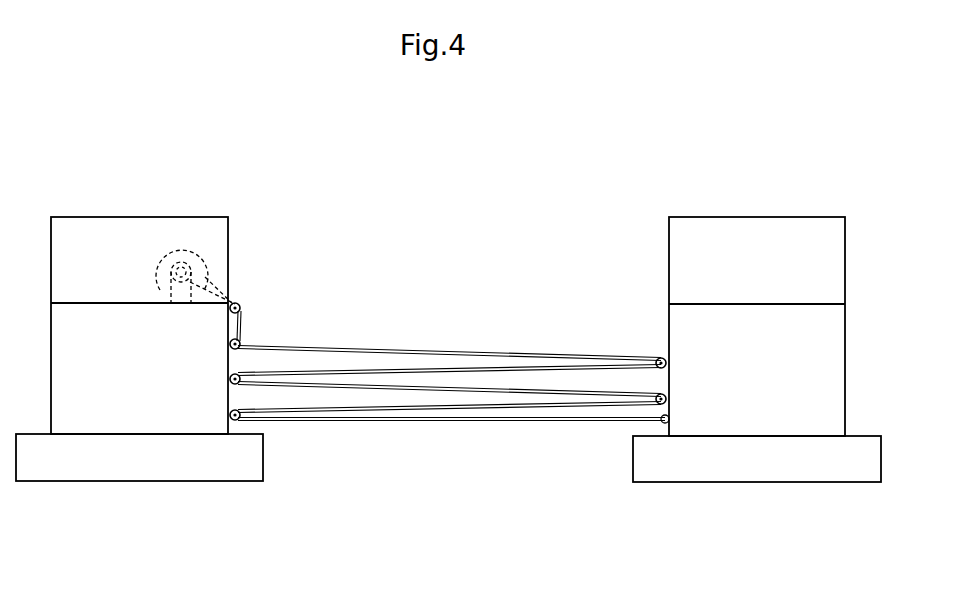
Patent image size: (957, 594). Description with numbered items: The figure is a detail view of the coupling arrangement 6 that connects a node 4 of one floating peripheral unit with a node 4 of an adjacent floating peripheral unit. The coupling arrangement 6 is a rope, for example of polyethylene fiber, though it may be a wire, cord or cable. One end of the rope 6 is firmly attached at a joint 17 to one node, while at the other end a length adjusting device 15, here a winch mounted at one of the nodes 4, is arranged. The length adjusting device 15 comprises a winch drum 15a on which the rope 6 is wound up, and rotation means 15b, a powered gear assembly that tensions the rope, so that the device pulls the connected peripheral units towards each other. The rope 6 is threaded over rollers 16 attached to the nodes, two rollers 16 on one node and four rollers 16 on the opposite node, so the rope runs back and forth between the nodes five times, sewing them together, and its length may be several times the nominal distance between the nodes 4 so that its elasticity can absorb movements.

The node 4 is at (153, 464).
The coupling arrangement 6 is at (405, 352).
The length adjusting device 15 is at (158, 252).
The winch drum 15a is at (166, 258).
The rotation means 15b is at (184, 265).
The roller 16 is at (231, 309).
The joint 17 is at (669, 419).